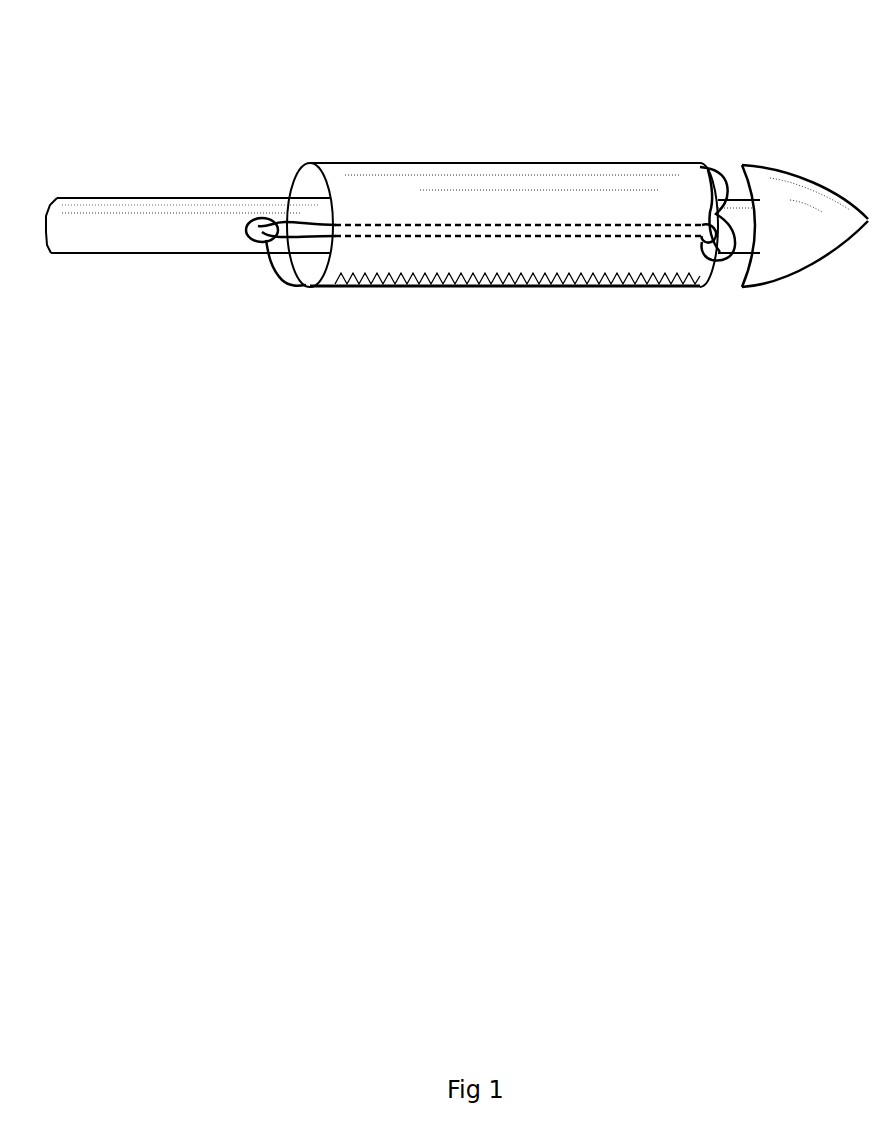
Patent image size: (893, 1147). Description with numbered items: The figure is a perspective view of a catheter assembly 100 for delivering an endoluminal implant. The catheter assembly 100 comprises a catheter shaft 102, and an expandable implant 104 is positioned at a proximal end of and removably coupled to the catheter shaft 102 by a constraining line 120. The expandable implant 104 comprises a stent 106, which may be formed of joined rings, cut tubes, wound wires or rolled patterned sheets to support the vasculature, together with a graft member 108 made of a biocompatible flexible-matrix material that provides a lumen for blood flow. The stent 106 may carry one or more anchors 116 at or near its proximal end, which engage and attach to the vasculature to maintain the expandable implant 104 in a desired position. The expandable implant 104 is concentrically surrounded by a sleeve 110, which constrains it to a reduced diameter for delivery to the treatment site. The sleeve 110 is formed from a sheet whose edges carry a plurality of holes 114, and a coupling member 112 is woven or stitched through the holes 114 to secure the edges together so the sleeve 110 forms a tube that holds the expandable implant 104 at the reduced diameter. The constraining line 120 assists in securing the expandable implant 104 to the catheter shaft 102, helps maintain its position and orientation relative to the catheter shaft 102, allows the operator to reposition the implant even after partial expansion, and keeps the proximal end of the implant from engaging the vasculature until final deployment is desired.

The catheter assembly 100 is at (765, 59).
The catheter shaft 102 is at (80, 254).
The expandable implant 104 is at (652, 166).
The stent 106 is at (290, 186).
The graft member 108 is at (490, 231).
The sleeve 110 is at (414, 163).
The coupling member 112 is at (466, 285).
The holes 114 is at (350, 283).
The anchors 116 is at (697, 290).
The constraining line 120 is at (528, 223).